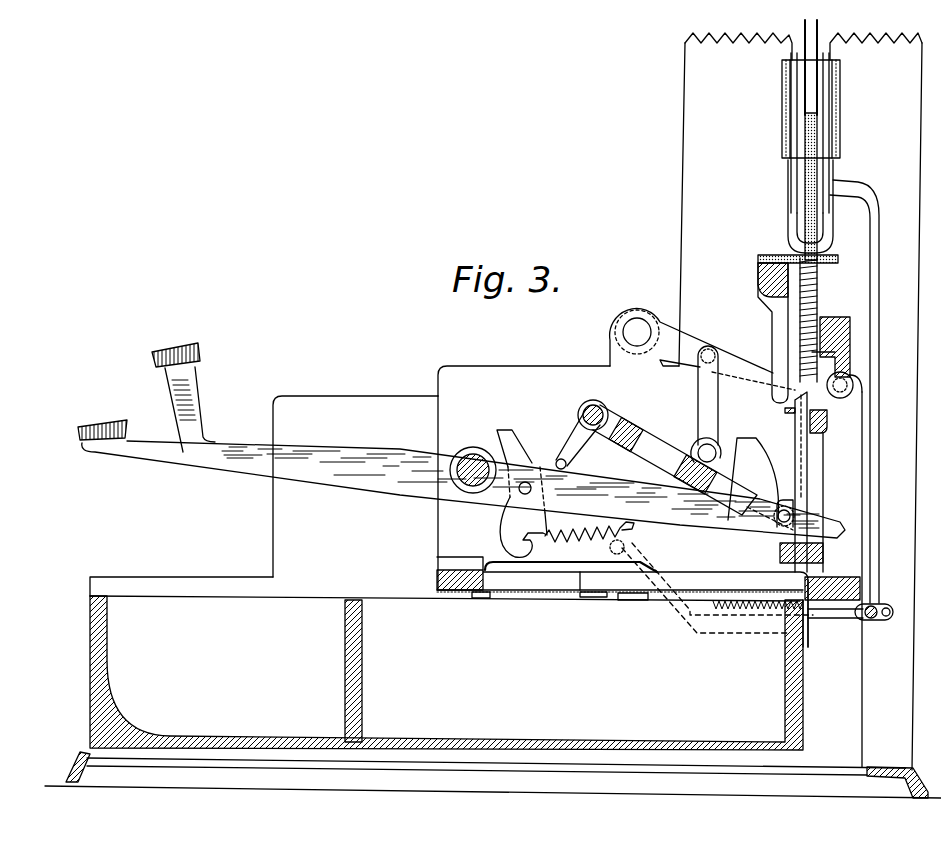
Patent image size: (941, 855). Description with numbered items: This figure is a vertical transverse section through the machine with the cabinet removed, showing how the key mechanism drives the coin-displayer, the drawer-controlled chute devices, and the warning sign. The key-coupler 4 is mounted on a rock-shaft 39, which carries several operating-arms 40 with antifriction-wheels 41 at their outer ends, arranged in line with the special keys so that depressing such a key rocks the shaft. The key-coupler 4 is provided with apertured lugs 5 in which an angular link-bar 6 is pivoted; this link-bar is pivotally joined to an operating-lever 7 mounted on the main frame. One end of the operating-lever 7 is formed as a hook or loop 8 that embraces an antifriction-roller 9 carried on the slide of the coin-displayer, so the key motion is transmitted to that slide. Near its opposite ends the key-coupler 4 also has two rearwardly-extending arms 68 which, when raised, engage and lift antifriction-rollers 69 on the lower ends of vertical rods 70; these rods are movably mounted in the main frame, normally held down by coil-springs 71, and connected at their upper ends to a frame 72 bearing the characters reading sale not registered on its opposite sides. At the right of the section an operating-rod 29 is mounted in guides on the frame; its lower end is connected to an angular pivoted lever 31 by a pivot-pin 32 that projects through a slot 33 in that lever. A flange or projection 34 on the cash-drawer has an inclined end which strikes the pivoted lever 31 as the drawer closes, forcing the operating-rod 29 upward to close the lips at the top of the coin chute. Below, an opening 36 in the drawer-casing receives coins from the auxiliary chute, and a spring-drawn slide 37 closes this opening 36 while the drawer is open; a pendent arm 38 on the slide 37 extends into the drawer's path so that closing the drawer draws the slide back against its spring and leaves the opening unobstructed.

The key-coupler 4 is at (648, 417).
The apertured lugs 5 is at (697, 448).
The angular link-bar 6 is at (720, 417).
The operating-lever 7 is at (693, 341).
The hook or loop 8 is at (824, 357).
The antifriction-roller 9 is at (820, 393).
The operating-rod 29 is at (880, 472).
The angular pivoted lever 31 is at (842, 617).
The pivot-pin 32 is at (873, 609).
The slot 33 is at (886, 617).
The flange or projection 34 is at (741, 634).
The opening 36 is at (518, 582).
The spring-drawn slide 37 is at (608, 590).
The pendent arm 38 is at (808, 646).
The rock-shaft 39 is at (582, 412).
The operating-arms 40 is at (573, 437).
The antifriction-wheels 41 is at (566, 466).
The rearwardly-extending arms 68 is at (752, 505).
The antifriction-rollers 69 is at (795, 516).
The vertical rods 70 is at (804, 468).
The coil-springs 71 is at (804, 193).
The frame 72 is at (782, 104).